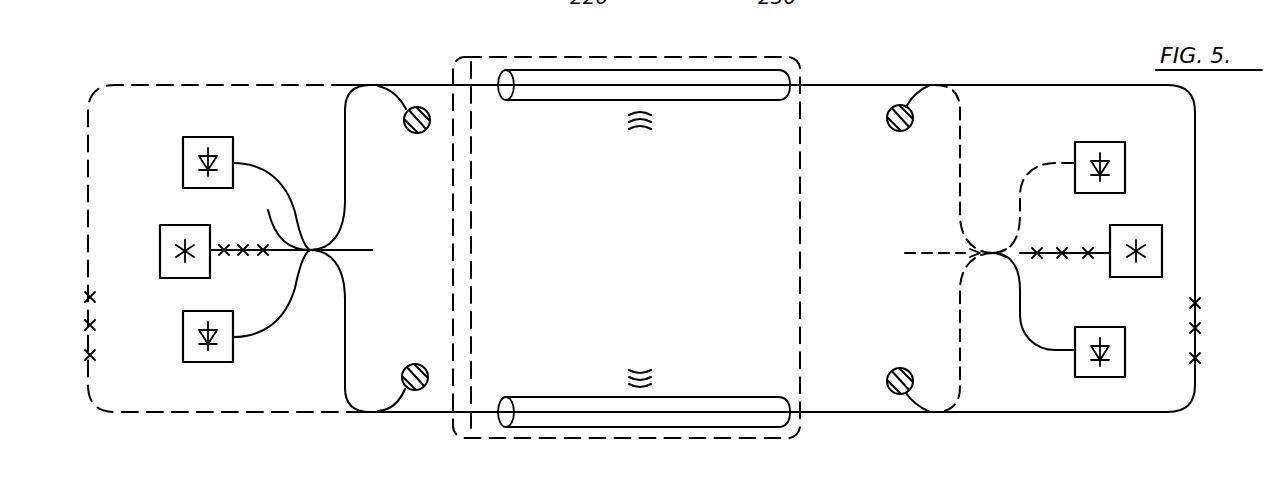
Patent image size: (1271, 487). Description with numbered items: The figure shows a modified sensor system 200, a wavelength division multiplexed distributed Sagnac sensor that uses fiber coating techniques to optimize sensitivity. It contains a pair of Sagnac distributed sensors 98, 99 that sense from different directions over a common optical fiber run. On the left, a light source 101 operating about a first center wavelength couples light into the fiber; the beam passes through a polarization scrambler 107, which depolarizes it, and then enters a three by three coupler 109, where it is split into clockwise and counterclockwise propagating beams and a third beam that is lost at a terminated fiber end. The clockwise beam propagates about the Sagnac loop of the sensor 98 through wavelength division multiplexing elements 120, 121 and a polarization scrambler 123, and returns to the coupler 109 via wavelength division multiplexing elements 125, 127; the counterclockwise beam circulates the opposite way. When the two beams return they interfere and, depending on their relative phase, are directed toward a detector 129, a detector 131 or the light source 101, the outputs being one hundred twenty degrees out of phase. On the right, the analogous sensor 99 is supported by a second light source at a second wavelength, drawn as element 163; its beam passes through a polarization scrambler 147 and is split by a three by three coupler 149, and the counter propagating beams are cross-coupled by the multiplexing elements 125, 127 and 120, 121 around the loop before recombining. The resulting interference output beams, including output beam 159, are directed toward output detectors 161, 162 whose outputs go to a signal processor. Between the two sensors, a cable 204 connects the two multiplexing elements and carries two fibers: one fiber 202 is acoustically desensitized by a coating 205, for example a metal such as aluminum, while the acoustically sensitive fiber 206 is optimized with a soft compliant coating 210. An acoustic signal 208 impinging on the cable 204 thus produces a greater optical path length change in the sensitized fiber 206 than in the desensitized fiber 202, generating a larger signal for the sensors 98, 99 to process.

The modified sensor system 200 is at (237, 65).
The sensor 98 is at (307, 68).
The sensor 99 is at (1036, 63).
The light source 101 is at (171, 225).
The polarization scrambler 107 is at (243, 247).
The 3 by 3 coupler 109 is at (310, 258).
The wavelength division multiplexing element 120 is at (390, 83).
The wavelength division multiplexing element 121 is at (930, 85).
The polarization scrambler 123 is at (1212, 318).
The wavelength division multiplexing element 125 is at (930, 411).
The wavelength division multiplexing element 127 is at (379, 407).
The detector 129 is at (191, 363).
The detector 131 is at (208, 137).
The polarization scrambler 147 is at (1058, 249).
The 3 by 3 coupler 149 is at (993, 258).
The output beam 159 is at (93, 301).
The output detector 161 is at (1125, 148).
The output detector 162 is at (1125, 350).
The light source 163 is at (1145, 225).
The fiber 202 is at (545, 397).
The cable 204 is at (647, 57).
The coating 205 is at (737, 101).
The acoustically sensitive fiber 206 is at (560, 96).
The acoustic signal 208 is at (640, 138).
The soft compliant coating 210 is at (737, 397).